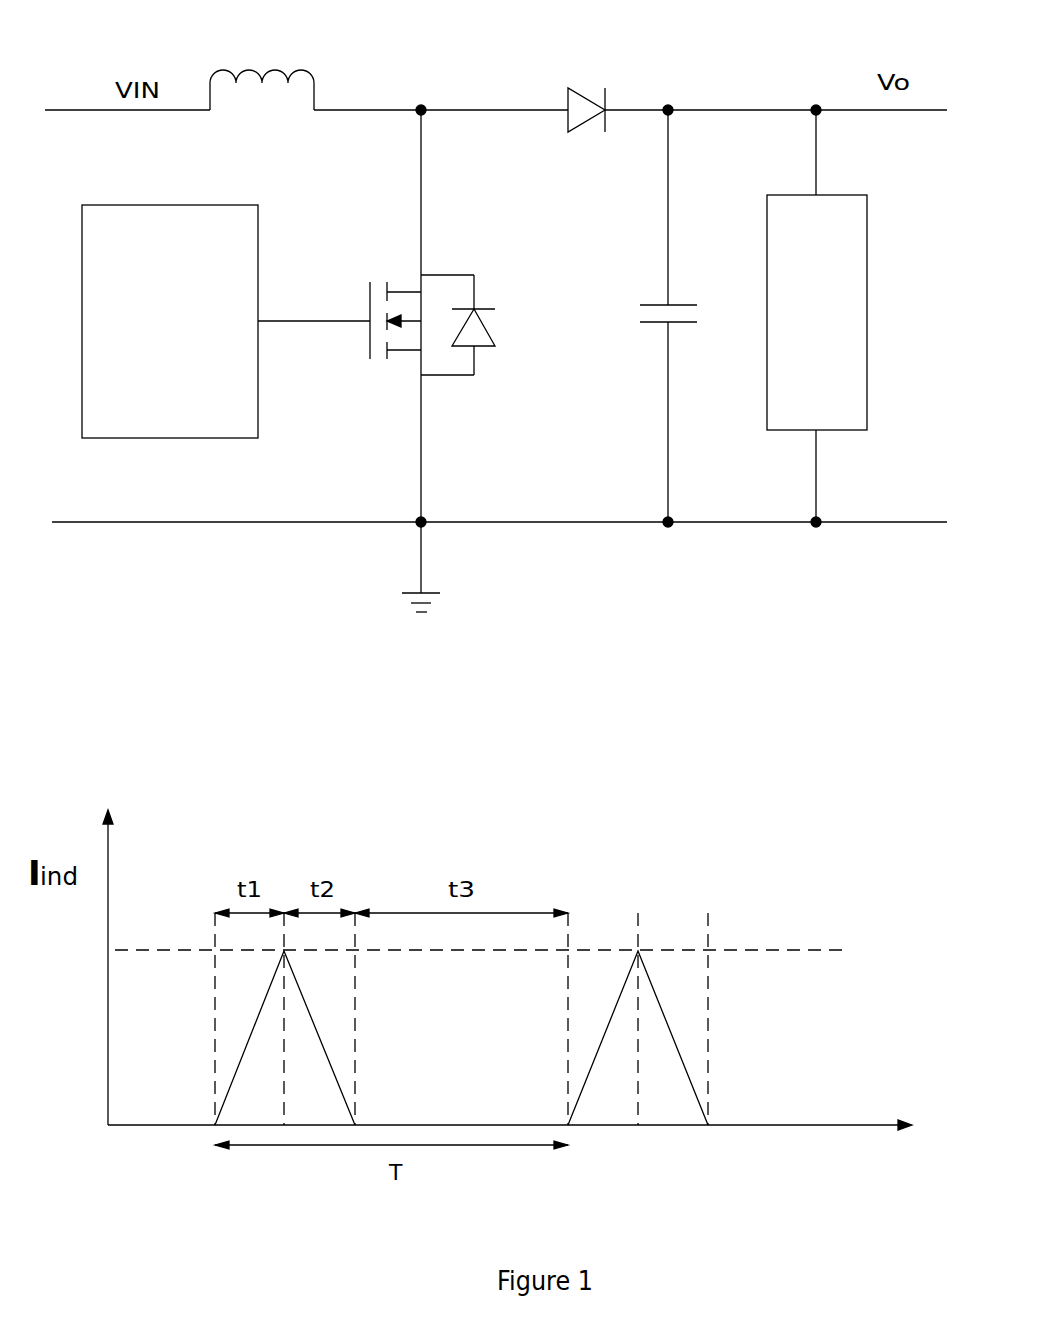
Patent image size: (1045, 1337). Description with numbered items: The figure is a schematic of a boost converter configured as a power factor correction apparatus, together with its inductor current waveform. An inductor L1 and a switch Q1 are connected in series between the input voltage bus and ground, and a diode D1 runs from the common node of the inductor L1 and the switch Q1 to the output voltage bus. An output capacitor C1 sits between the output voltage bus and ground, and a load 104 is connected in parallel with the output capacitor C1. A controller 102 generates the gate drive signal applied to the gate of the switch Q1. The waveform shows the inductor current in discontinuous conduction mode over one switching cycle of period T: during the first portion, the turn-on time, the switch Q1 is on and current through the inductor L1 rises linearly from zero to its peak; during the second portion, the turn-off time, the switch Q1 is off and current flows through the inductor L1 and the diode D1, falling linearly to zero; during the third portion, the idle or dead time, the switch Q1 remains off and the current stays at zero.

The controller 102 is at (193, 390).
The load 104 is at (840, 362).
The inductor L1 is at (262, 58).
The diode D1 is at (596, 94).
The output capacitor C1 is at (639, 316).
The switch Q1 is at (448, 316).